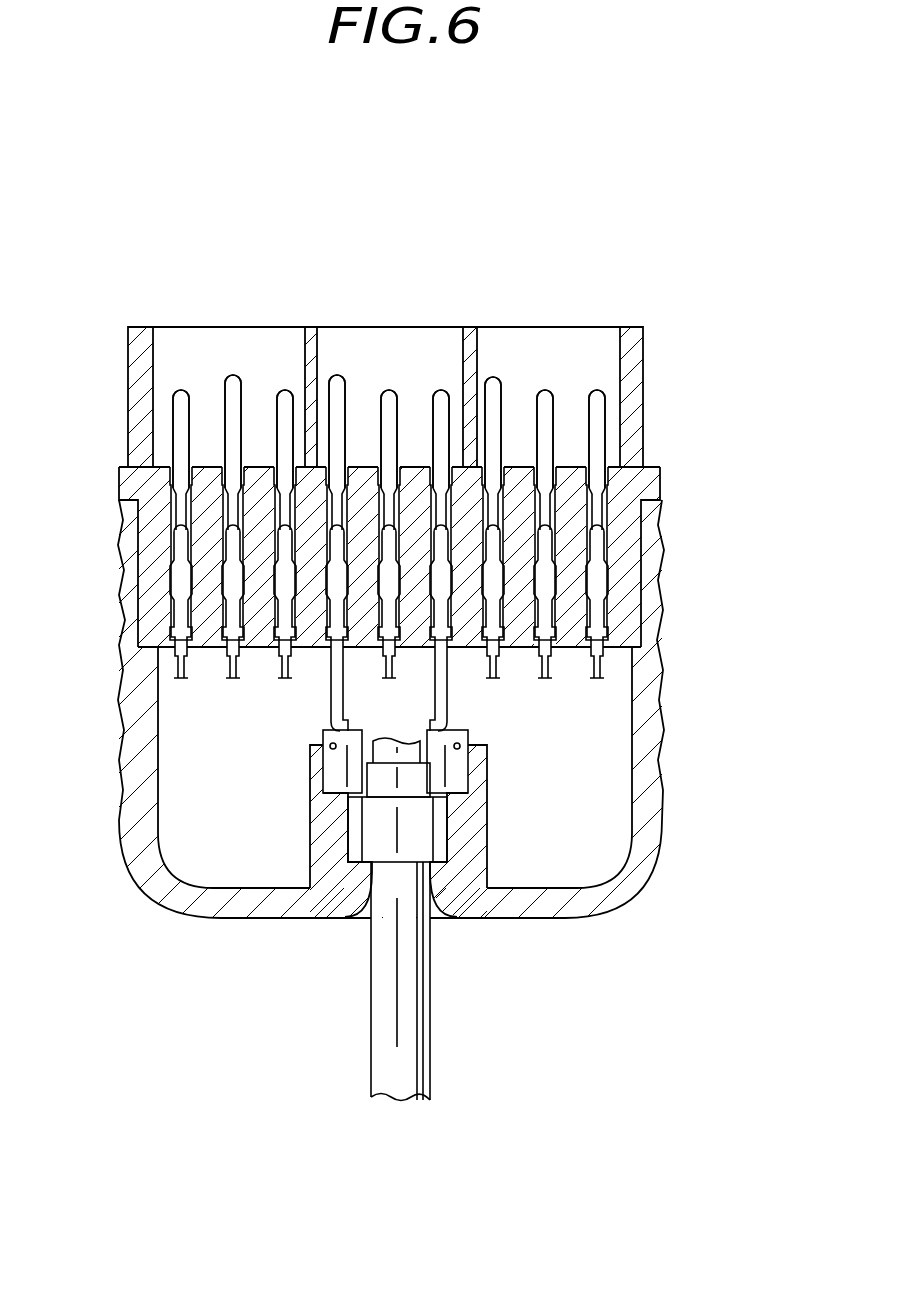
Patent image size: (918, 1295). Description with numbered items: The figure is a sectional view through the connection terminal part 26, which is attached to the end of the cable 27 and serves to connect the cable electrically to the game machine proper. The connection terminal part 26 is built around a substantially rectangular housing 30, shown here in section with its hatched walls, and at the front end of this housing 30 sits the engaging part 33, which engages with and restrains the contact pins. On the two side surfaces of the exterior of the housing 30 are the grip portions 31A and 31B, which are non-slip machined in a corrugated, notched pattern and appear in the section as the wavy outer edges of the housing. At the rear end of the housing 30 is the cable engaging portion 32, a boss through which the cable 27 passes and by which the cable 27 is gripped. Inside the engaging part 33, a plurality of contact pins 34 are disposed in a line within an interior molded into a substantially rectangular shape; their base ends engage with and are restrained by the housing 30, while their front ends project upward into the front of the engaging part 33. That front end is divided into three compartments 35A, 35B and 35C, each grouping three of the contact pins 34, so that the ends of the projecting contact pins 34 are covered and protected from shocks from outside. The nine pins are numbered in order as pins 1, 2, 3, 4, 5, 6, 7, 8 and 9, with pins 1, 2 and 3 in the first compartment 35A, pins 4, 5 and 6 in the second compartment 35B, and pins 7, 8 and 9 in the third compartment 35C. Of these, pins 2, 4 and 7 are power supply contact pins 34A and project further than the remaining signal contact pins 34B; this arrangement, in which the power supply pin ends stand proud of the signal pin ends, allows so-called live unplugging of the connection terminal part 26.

The connection terminal part 26 is at (680, 326).
The cable 27 is at (434, 1043).
The housing 30 is at (676, 725).
The grip portion 31A is at (658, 605).
The grip portion 31B is at (126, 633).
The cable engaging portion 32 is at (310, 905).
The engaging part 33 is at (655, 437).
The contact pins 34 is at (606, 401).
The power supply contact pins 34A is at (240, 373).
The signal contact pins 34B is at (182, 390).
The compartment 35A is at (202, 340).
The compartment 35B is at (447, 343).
The compartment 35C is at (558, 342).
The pin no. 1 is at (180, 388).
The pin no. 2 is at (233, 388).
The pin no. 3 is at (286, 388).
The pin no. 4 is at (336, 388).
The pin no. 5 is at (390, 388).
The pin no. 6 is at (443, 388).
The pin no. 7 is at (495, 388).
The pin no. 8 is at (546, 388).
The pin no. 9 is at (598, 388).